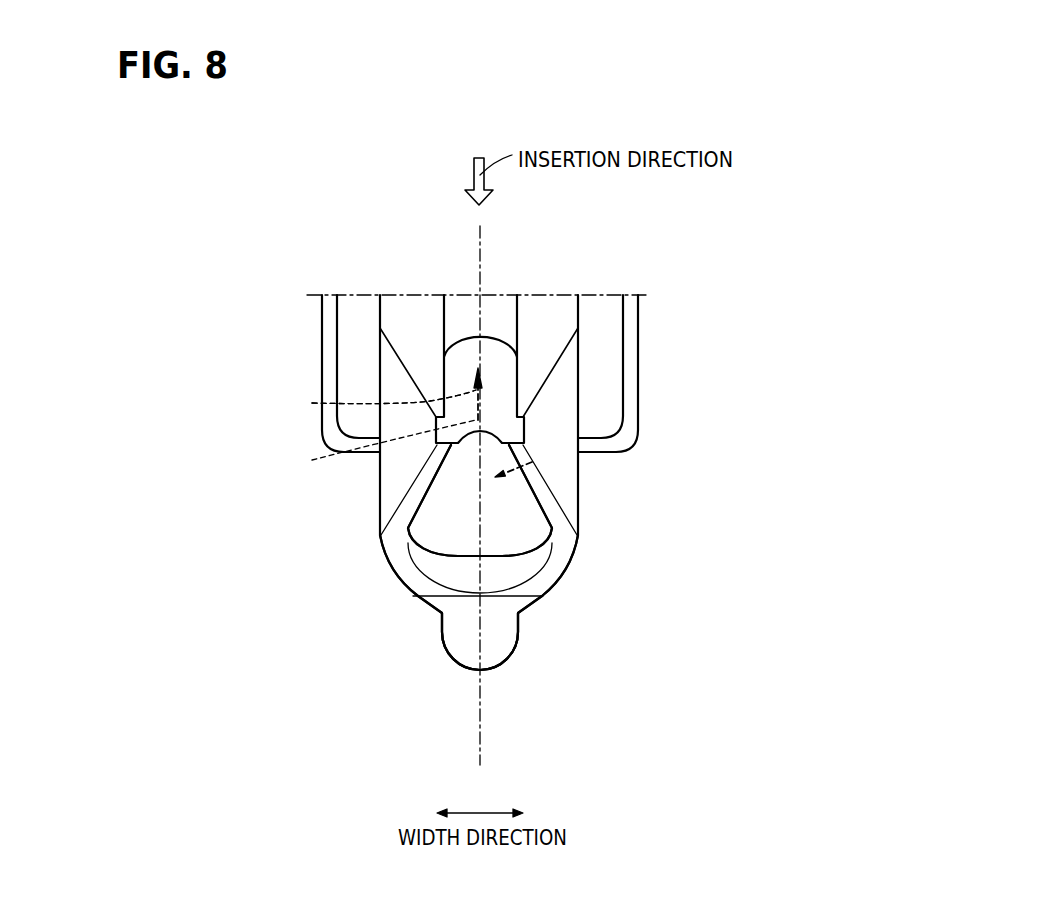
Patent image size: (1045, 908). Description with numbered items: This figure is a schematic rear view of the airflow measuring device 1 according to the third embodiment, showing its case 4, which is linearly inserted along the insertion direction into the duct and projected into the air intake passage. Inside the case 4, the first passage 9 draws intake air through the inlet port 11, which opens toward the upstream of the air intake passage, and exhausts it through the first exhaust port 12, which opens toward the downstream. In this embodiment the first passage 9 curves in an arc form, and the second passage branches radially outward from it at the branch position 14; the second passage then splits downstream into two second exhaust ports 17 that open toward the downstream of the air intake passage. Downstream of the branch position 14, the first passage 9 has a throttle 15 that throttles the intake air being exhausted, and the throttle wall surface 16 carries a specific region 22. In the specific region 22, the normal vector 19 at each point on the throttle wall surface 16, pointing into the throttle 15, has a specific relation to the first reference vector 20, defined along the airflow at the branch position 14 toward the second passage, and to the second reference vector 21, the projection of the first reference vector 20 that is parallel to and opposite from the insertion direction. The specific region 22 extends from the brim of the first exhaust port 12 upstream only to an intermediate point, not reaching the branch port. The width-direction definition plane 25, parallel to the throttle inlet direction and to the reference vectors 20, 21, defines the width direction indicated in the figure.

The airflow measuring device 1 is at (673, 237).
The case 4 is at (313, 282).
The first passage 9 is at (479, 602).
The inlet port 11 is at (510, 542).
The first exhaust port 12 is at (503, 570).
The branch position 14 is at (379, 451).
The throttle 15 is at (437, 540).
The throttle wall surface 16 is at (480, 500).
The second exhaust ports 17 is at (612, 323).
The normal vector 19 is at (498, 462).
The first reference vector 20 is at (367, 395).
The second reference vector 21 is at (394, 397).
The specific region 22 is at (533, 497).
The width-direction definition plane 25 is at (484, 238).